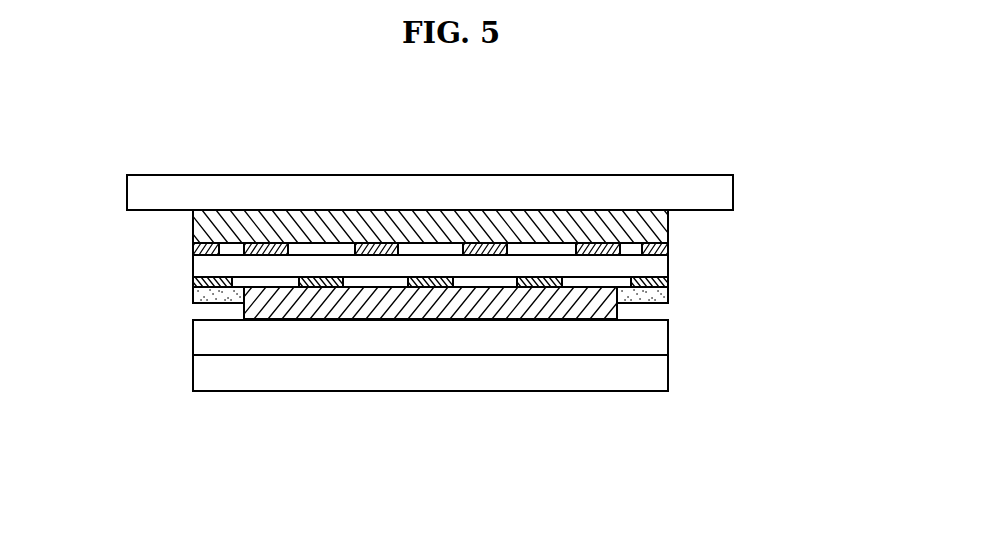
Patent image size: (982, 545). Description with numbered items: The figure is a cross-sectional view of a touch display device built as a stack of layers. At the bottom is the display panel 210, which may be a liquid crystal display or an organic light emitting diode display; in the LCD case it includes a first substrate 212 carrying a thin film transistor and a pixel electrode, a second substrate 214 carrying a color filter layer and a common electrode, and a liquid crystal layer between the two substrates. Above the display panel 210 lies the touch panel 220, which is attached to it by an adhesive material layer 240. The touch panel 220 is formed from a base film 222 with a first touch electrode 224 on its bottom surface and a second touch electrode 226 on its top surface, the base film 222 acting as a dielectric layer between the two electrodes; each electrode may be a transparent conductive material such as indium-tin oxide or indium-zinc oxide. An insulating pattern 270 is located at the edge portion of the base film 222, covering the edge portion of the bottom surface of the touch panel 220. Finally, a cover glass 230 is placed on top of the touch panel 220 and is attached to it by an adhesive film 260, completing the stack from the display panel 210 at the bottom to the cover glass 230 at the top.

The display panel 210 is at (513, 355).
The first substrate 212 is at (668, 378).
The second substrate 214 is at (668, 340).
The touch panel 220 is at (516, 257).
The base film 222 is at (668, 265).
The first touch electrode 224 is at (668, 280).
The second touch electrode 226 is at (668, 244).
The cover glass 230 is at (725, 183).
The adhesive material layer 240 is at (582, 305).
The adhesive film 260 is at (541, 228).
The insulating pattern 270 is at (193, 298).